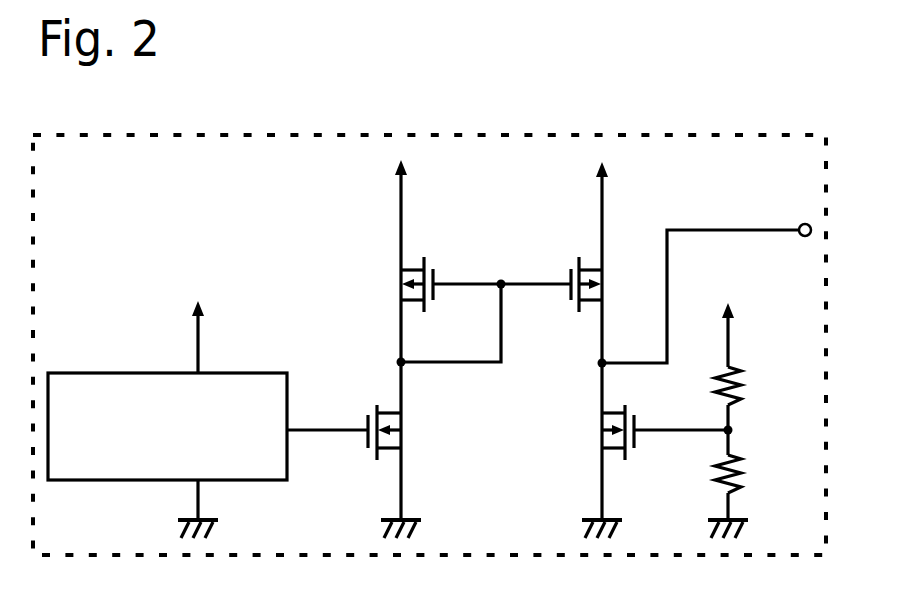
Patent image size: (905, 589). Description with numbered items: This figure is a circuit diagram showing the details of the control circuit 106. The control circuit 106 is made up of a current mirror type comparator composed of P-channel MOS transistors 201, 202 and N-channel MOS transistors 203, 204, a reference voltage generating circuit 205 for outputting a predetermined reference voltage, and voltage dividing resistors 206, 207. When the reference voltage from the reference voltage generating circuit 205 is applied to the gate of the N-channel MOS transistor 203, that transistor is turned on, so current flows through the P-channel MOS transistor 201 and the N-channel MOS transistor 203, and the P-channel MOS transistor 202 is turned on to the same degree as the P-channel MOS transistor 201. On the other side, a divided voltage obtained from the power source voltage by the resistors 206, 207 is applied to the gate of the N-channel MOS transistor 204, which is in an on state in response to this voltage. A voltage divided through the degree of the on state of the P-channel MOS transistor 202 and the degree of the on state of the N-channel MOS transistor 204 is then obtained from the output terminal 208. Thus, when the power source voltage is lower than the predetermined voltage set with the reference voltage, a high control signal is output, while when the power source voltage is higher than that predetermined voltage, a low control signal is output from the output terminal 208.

The control circuit 106 is at (222, 135).
The P-channel MOS transistor 201 is at (392, 275).
The P-channel MOS transistor 202 is at (590, 252).
The N-channel MOS transistor 203 is at (408, 442).
The N-channel MOS transistor 204 is at (592, 438).
The reference voltage generating circuit 205 is at (248, 372).
The voltage dividing resistor 206 is at (748, 377).
The voltage dividing resistor 207 is at (748, 470).
The output terminal 208 is at (797, 225).